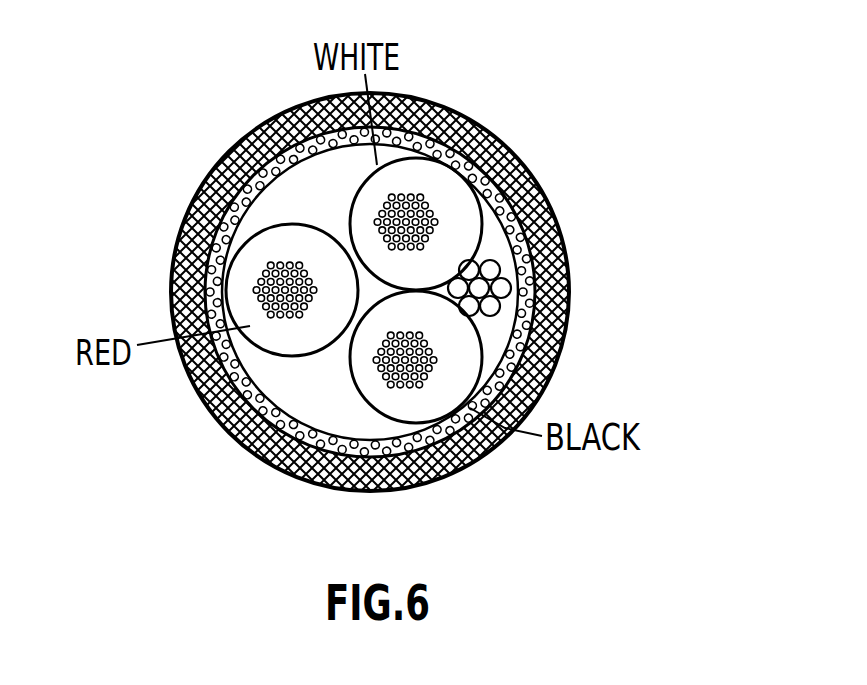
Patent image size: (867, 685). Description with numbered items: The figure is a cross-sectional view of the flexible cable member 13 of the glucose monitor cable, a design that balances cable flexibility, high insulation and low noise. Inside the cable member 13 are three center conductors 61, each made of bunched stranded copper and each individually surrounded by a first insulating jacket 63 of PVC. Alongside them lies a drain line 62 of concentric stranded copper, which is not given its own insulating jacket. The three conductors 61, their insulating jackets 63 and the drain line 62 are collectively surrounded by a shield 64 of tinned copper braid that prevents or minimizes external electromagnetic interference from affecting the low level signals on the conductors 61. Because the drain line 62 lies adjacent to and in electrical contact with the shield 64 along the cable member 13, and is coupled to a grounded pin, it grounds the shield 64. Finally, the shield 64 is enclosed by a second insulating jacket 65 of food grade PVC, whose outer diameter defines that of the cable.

The flexible cable member 13 is at (500, 114).
The center conductors 61 is at (270, 268).
The drain line 62 is at (570, 240).
The first insulating jacket 63 is at (235, 292).
The shield 64 is at (560, 282).
The second insulating jacket 65 is at (567, 338).